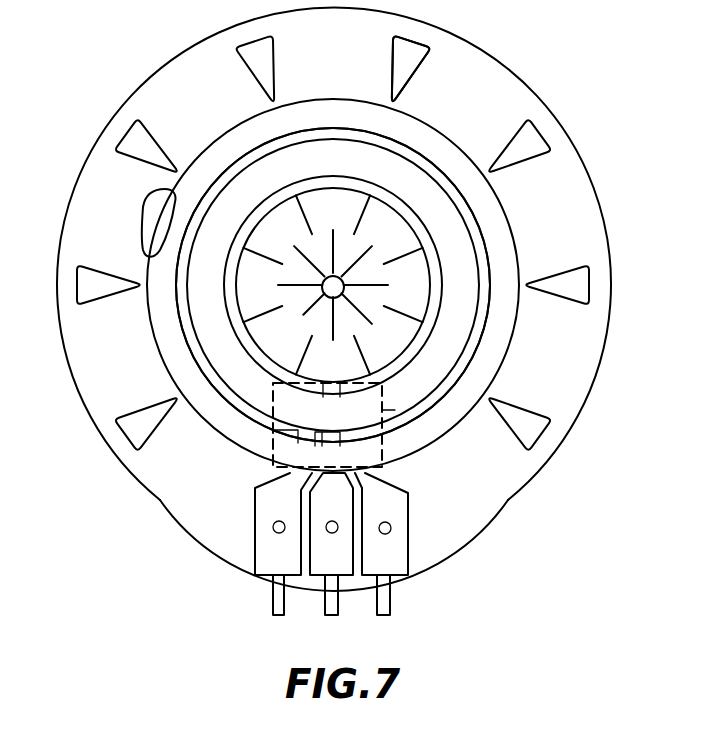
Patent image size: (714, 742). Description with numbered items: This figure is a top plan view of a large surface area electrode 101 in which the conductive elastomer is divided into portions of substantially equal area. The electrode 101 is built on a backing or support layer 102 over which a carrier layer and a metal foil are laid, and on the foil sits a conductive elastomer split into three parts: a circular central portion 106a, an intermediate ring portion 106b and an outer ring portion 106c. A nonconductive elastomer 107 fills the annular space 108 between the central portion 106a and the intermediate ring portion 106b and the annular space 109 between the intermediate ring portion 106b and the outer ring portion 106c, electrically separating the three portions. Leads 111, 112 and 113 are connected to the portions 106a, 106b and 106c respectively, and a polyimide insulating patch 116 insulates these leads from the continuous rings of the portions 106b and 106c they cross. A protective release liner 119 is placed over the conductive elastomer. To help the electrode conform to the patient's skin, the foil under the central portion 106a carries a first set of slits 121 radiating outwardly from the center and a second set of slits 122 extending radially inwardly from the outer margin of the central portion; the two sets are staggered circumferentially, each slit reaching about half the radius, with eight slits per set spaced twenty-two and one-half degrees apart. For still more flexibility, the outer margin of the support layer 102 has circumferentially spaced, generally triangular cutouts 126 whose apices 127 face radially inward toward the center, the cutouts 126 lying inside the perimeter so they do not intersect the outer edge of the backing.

The electrode 101 is at (131, 80).
The backing or support layer 102 is at (517, 100).
The circular central portion 106a is at (187, 382).
The intermediate ring portion 106b is at (222, 359).
The outer ring portion 106c is at (297, 350).
The nonconductive elastomer 107 is at (425, 240).
The annular space 108 is at (440, 317).
The annular space 109 is at (472, 353).
The lead 111 is at (342, 503).
The lead 112 is at (387, 555).
The lead 113 is at (262, 545).
The polyimide insulating patch 116 is at (407, 418).
The protective release liner 119 is at (150, 210).
The first set of slits 121 is at (333, 328).
The second set of slits 122 is at (300, 213).
The triangular cutouts 126 is at (427, 62).
The apices 127 is at (408, 100).